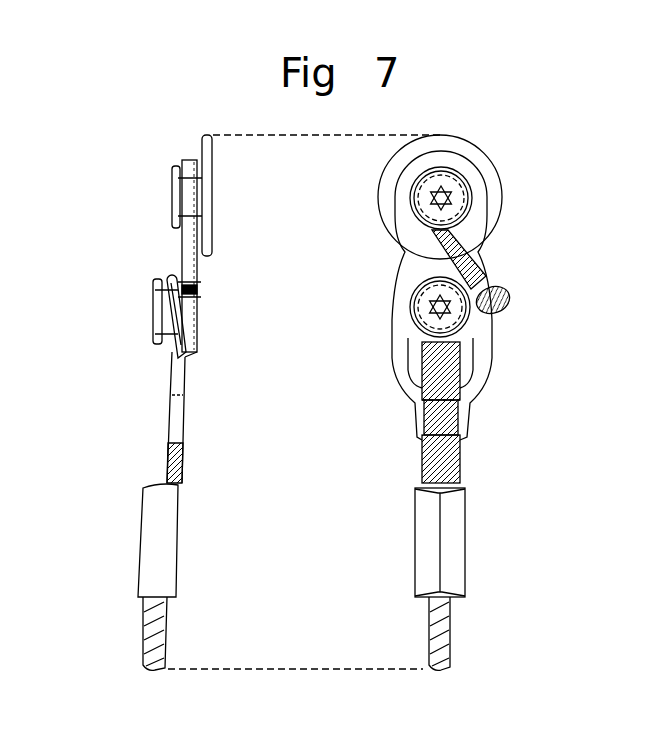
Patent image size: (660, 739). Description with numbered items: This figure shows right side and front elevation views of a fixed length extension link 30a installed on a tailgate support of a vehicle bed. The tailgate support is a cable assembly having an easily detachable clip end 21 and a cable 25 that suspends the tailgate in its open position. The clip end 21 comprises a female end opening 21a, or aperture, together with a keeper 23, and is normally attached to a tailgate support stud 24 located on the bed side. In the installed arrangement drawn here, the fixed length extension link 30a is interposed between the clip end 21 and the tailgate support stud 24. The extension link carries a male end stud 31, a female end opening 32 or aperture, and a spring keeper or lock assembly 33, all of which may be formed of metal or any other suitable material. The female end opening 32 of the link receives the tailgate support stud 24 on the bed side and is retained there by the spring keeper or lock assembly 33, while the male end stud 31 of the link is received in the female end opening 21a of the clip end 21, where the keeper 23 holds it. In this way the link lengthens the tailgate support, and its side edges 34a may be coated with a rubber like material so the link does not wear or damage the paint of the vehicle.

The clip end 21 is at (193, 378).
The female end opening 21a is at (467, 350).
The keeper 23 is at (168, 433).
The tailgate support stud 24 is at (170, 181).
The cable 25 is at (172, 638).
The fixed length extension link 30a is at (196, 220).
The male end stud 31 is at (143, 308).
The female end opening 32 is at (465, 265).
The spring keeper or lock assembly 33 is at (175, 248).
The side edges 34a is at (190, 273).